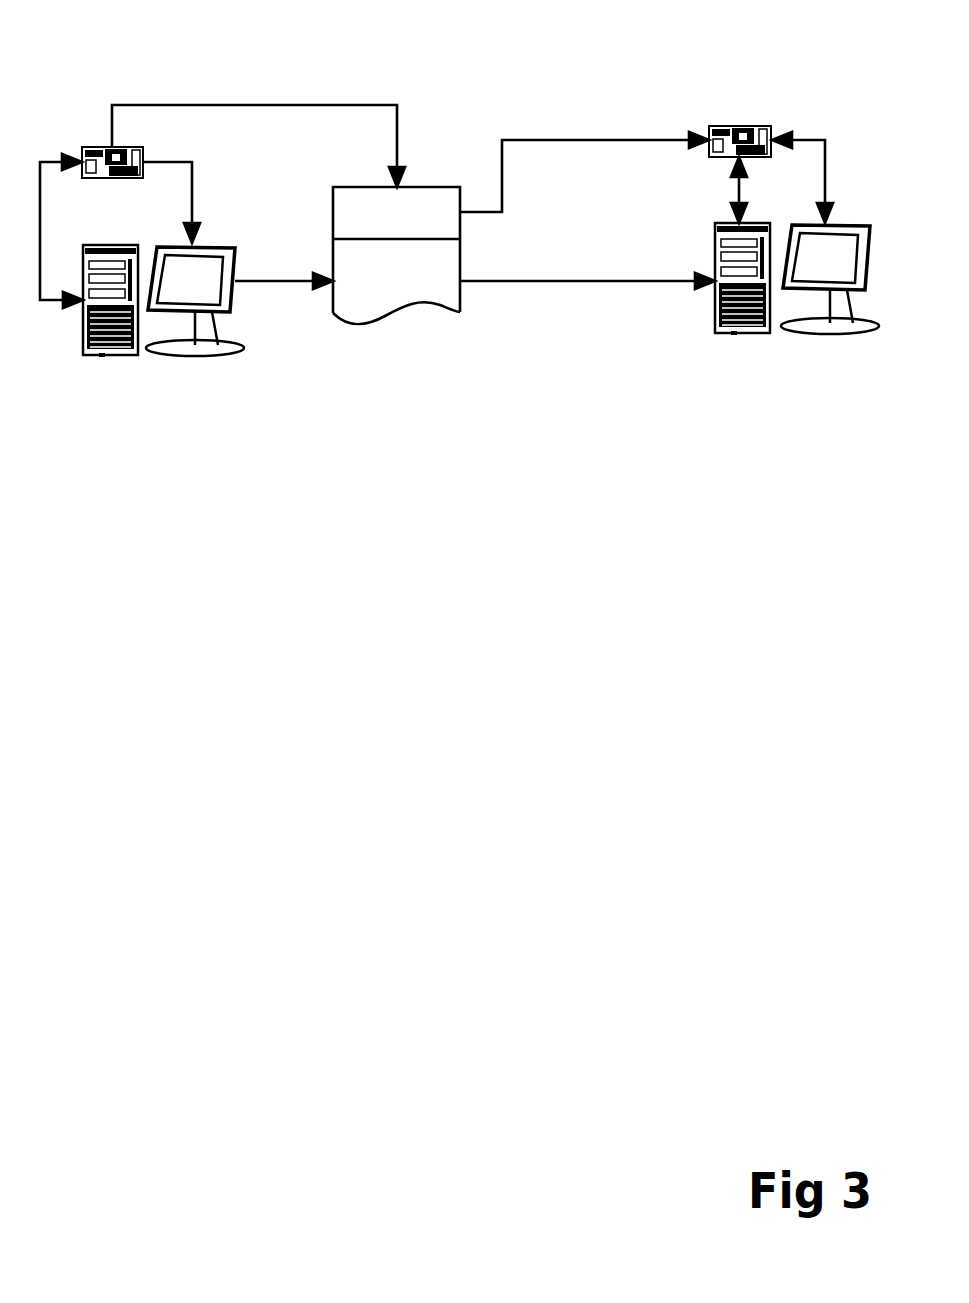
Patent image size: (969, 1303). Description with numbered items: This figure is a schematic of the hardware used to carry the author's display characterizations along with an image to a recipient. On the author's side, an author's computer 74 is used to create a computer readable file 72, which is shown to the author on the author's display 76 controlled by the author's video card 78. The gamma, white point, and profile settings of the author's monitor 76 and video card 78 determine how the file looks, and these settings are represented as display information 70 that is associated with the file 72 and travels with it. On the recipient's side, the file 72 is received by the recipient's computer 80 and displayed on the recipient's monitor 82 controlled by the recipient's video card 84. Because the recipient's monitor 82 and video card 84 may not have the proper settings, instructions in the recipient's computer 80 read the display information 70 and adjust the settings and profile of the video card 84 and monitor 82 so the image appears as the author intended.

The display information 70 is at (407, 243).
The file 72 is at (402, 312).
The author's computer 74 is at (110, 357).
The author's display 76 is at (218, 354).
The author's video card 78 is at (83, 148).
The recipient's computer 80 is at (740, 335).
The recipient's monitor 82 is at (863, 330).
The recipient's video card 84 is at (760, 127).